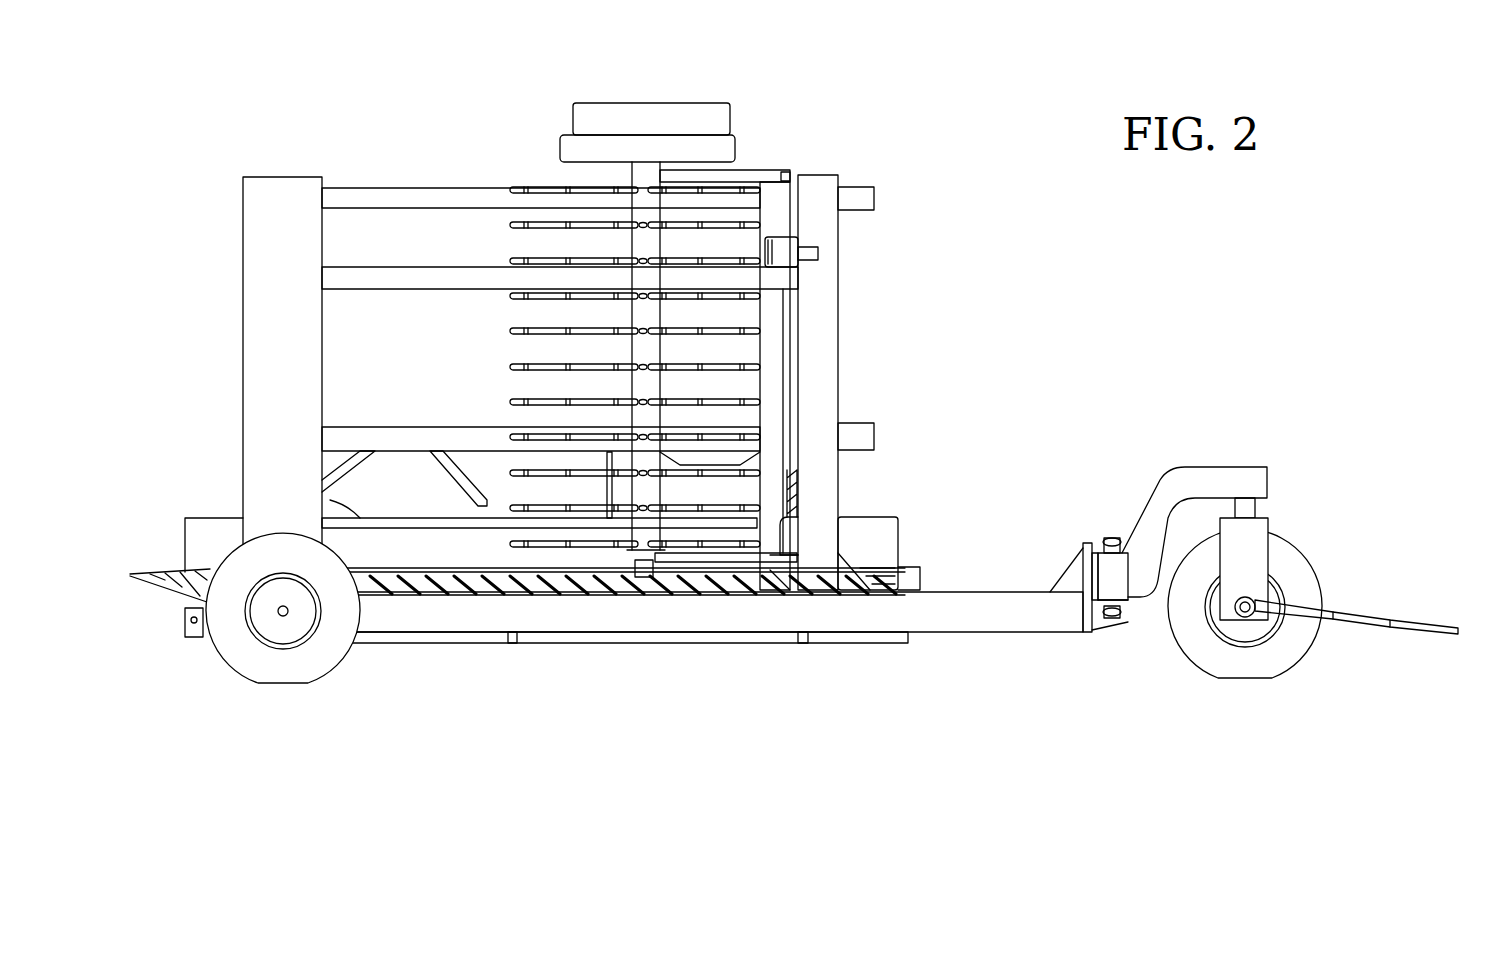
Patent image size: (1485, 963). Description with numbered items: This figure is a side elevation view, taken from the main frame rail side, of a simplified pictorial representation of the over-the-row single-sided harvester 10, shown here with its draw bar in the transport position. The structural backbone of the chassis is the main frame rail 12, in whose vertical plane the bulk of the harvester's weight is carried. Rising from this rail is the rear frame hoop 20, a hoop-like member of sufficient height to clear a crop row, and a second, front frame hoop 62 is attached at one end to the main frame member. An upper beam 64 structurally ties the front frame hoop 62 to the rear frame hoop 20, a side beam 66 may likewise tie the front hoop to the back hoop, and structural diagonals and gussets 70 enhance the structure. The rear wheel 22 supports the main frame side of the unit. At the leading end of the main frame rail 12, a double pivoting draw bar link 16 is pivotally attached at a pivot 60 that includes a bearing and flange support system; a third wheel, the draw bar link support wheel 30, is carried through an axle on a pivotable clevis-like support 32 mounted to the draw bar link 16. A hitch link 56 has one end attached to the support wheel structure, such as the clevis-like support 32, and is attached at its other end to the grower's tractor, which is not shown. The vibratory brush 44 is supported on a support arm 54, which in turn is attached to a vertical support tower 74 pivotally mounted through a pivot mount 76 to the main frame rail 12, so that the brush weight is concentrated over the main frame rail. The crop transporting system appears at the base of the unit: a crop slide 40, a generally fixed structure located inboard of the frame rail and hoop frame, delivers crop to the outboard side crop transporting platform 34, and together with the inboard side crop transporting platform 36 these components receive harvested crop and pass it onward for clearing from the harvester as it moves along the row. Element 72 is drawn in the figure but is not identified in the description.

The over-the-row single-sided harvester 10 is at (922, 97).
The main frame rail 12 is at (962, 632).
The double pivoting draw bar link 16 is at (1192, 467).
The rearmost frame hoop 20 is at (243, 290).
The rear wheel 22 is at (345, 655).
The draw bar link support wheel 30 is at (1310, 560).
The pivotable clevis-like support 32 is at (1270, 525).
The outboard side crop transporting platform 34 is at (157, 572).
The inboard side crop transporting platform 36 is at (170, 600).
The crop slide 40 is at (190, 518).
The vibratory brush 44 is at (497, 253).
The support arm 54 is at (697, 565).
The hitch link 56 is at (1410, 638).
The pivot 60 is at (1112, 538).
The front frame hoop 62 is at (840, 272).
The upper beam 64 is at (420, 187).
The side beam 66 is at (410, 427).
The structural diagonals 70 is at (350, 475).
The base block 72 is at (866, 560).
The vertical support tower 74 is at (798, 343).
The pivot mount 76 is at (775, 562).